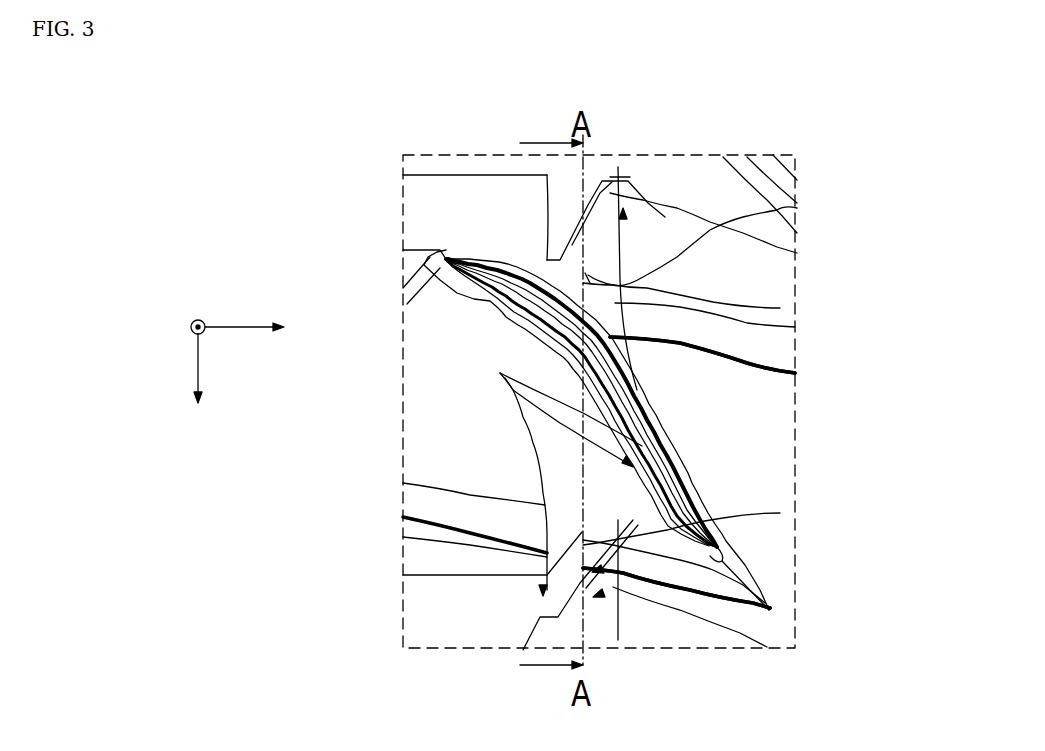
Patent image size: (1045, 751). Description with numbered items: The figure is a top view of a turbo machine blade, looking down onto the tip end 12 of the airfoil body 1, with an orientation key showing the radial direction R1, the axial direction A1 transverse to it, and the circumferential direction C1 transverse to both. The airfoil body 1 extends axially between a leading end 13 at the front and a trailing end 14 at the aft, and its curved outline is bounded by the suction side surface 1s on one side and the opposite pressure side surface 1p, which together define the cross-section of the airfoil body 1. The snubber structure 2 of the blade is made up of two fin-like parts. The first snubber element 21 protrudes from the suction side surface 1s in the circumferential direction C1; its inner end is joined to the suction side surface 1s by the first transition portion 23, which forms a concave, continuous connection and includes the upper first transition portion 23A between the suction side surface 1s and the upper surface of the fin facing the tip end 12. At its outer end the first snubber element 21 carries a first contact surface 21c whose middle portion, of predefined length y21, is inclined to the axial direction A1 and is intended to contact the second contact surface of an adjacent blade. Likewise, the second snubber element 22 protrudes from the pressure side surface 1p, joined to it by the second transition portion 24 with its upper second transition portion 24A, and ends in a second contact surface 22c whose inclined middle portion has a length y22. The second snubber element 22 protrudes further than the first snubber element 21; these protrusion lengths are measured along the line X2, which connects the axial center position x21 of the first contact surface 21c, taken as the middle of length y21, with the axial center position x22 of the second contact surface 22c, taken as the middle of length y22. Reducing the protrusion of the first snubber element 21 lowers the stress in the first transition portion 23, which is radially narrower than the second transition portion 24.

The airfoil body 1 is at (684, 498).
The suction side surface 1s is at (636, 397).
The pressure side surface 1p is at (478, 331).
The snubber structure 2 is at (494, 414).
The tip end 12 is at (450, 230).
The leading end 13 is at (405, 267).
The trailing end 14 is at (778, 614).
The first snubber element 21 is at (780, 308).
The first contact surface 21c is at (569, 240).
The center position of the first contact surface x21 is at (587, 203).
The length of the middle portion of the first contact surface y21 is at (586, 270).
The line X2 is at (797, 209).
The first transition portion 23 is at (611, 334).
The upper first transition portion 23A is at (702, 355).
The second snubber element 22 is at (545, 492).
The second contact surface 22c is at (592, 572).
The center position of the second contact surface x22 is at (618, 640).
The length of the middle portion of the second contact surface y22 is at (547, 556).
The second transition portion 24 is at (780, 513).
The upper second transition portion 24A is at (676, 588).
The axial direction A1 is at (247, 325).
The radial direction R1 is at (190, 330).
The circumferential direction C1 is at (203, 362).